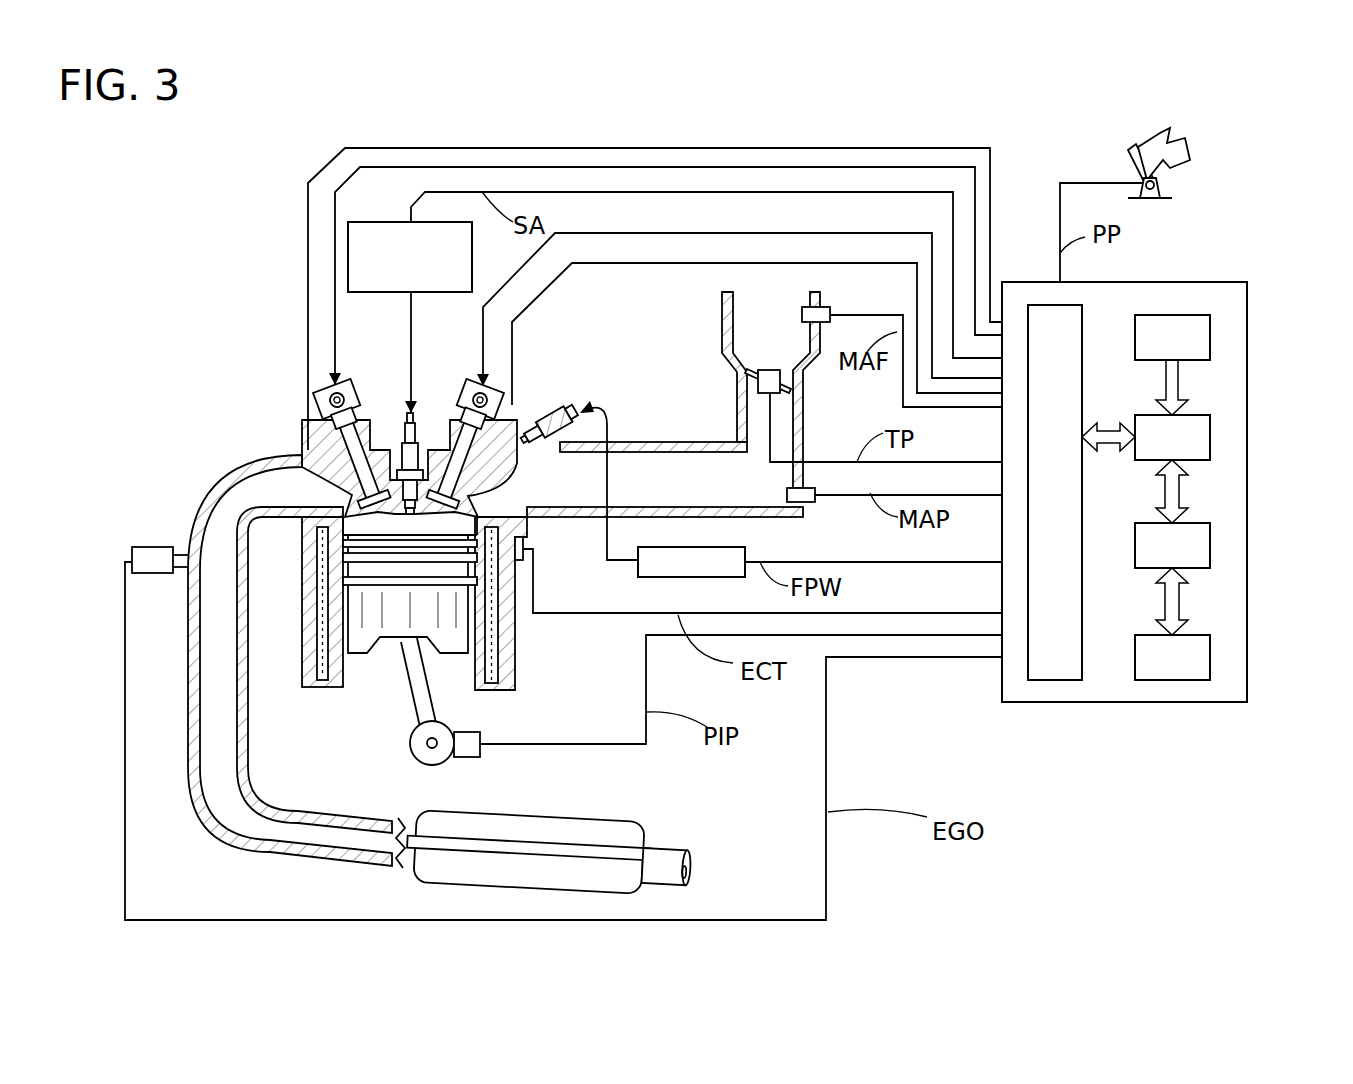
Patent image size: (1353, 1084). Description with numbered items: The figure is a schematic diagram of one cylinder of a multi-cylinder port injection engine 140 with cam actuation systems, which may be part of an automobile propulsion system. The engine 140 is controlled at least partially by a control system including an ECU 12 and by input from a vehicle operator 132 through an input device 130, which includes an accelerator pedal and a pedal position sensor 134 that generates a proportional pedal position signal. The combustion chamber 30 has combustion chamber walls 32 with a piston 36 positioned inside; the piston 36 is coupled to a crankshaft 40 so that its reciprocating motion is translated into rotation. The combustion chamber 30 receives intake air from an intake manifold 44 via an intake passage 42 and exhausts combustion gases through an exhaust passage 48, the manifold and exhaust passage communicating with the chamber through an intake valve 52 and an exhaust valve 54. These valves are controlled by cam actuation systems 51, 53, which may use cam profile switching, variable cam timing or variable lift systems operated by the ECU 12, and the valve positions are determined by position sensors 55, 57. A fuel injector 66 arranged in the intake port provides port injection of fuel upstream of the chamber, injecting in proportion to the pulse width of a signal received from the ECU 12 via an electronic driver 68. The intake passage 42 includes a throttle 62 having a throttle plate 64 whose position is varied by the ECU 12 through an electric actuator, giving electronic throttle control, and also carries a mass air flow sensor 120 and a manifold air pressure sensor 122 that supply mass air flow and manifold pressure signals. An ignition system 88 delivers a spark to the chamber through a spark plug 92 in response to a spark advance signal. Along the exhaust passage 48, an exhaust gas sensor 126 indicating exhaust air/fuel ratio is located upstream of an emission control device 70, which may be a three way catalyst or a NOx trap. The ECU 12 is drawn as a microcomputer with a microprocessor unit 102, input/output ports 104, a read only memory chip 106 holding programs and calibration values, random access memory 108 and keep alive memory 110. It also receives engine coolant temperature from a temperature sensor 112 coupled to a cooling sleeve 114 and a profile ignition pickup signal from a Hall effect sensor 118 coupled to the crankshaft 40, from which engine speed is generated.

The electronic control unit 12 is at (1176, 478).
The combustion chamber 30 is at (407, 527).
The combustion chamber walls 32 is at (348, 672).
The piston 36 is at (412, 625).
The crankshaft 40 is at (420, 763).
The intake passage 42 is at (785, 344).
The intake manifold 44 is at (716, 494).
The exhaust passage 48 is at (283, 500).
The cam actuation system 51 is at (470, 393).
The intake valve 52 is at (455, 495).
The cam actuation system 53 is at (351, 388).
The exhaust valve 54 is at (353, 497).
The position sensor 55 is at (497, 407).
The position sensor 57 is at (322, 408).
The throttle 62 is at (780, 375).
The throttle plate 64 is at (750, 373).
The fuel injector 66 is at (557, 415).
The electronic driver 68 is at (667, 580).
The emission control device 70 is at (600, 818).
The ignition system 88 is at (360, 222).
The spark plug 92 is at (414, 420).
The microprocessor unit 102 is at (1212, 432).
The input/output ports 104 is at (1082, 317).
The read only memory chip 106 is at (1210, 335).
The random access memory 108 is at (1212, 545).
The keep alive memory 110 is at (1212, 655).
The temperature sensor 112 is at (535, 550).
The cooling sleeve 114 is at (497, 637).
The Hall effect sensor 118 is at (467, 757).
The mass air flow sensor 120 is at (825, 307).
The manifold air pressure sensor 122 is at (805, 503).
The exhaust gas sensor 126 is at (132, 548).
The input device 130 is at (1133, 160).
The vehicle operator 132 is at (1183, 143).
The pedal position sensor 134 is at (1167, 190).
The engine 140 is at (228, 366).